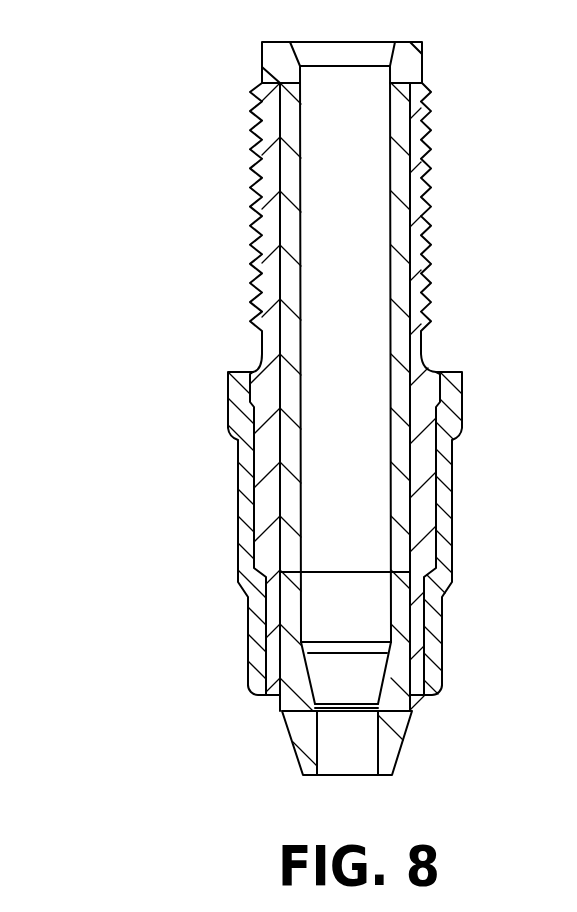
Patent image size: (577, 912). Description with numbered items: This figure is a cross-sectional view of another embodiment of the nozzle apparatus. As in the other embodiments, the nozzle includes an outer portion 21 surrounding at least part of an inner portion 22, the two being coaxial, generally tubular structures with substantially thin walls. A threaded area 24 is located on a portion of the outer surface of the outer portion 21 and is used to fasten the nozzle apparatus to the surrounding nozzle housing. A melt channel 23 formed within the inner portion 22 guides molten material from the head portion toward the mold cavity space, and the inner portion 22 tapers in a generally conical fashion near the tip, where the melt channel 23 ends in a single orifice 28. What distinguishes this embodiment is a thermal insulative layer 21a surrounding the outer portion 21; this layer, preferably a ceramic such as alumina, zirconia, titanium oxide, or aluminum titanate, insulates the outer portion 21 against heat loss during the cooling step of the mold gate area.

The outer portion 21 is at (255, 542).
The thermal insulative layer 21a is at (243, 468).
The inner portion 22 is at (292, 738).
The melt channel 23 is at (362, 260).
The threaded area 24 is at (428, 132).
The orifice 28 is at (362, 742).